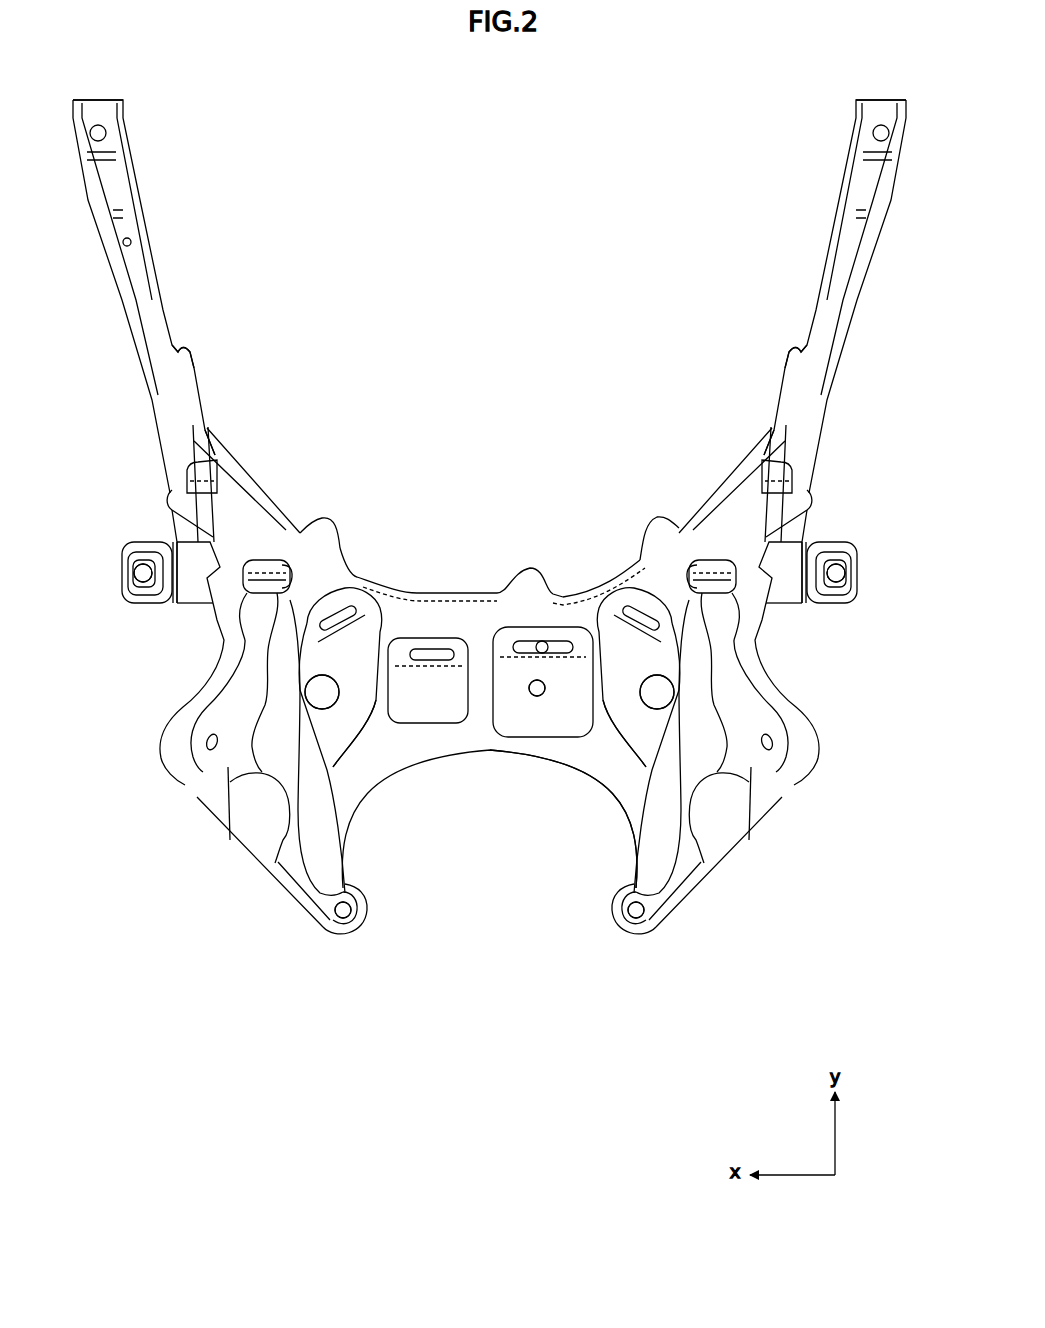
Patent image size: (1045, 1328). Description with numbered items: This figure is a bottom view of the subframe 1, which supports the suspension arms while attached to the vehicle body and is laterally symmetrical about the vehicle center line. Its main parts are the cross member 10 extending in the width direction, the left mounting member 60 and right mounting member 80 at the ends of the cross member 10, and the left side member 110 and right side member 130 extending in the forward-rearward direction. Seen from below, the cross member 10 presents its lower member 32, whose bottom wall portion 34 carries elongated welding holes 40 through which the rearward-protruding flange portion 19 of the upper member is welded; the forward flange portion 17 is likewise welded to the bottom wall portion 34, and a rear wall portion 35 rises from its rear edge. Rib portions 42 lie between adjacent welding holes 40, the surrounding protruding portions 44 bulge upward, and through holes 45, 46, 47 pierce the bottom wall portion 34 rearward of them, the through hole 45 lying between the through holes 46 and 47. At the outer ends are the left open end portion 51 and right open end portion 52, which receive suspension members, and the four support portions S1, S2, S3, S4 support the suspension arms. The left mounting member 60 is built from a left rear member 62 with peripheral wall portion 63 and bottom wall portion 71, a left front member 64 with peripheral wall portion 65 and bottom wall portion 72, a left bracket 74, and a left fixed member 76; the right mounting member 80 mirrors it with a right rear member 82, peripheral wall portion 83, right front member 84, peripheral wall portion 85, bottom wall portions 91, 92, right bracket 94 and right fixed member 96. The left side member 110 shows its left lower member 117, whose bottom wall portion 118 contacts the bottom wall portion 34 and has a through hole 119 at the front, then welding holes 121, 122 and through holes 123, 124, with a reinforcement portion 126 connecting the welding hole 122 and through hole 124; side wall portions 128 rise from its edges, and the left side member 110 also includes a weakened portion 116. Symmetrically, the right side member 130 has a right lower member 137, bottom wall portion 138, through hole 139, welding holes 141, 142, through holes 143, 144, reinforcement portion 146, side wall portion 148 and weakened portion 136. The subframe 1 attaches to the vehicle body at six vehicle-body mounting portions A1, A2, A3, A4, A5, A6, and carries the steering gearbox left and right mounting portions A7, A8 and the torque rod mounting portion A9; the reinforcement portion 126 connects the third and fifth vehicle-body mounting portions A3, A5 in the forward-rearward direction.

The subframe 1 is at (258, 162).
The cross member 10 is at (592, 545).
The flange portion 17 is at (565, 590).
The flange portion 19 is at (530, 594).
The lower member 32 is at (493, 787).
The bottom wall portion 34 is at (427, 808).
The rear wall portion 35 is at (550, 753).
The welding hole 40 is at (345, 620).
The rib portion 42 is at (388, 680).
The protruding portion 44 is at (397, 724).
The through hole 45 is at (543, 691).
The through hole 46 is at (650, 694).
The through hole 47 is at (325, 693).
The left open end portion 51 is at (834, 515).
The right open end portion 52 is at (145, 515).
The left mounting member 60 is at (795, 618).
The left rear member 62 is at (782, 618).
The peripheral wall portion 63 is at (760, 604).
The left front member 64 is at (767, 538).
The peripheral wall portion 65 is at (788, 547).
The bottom wall portion 71 is at (714, 592).
The bottom wall portion 72 is at (722, 575).
The left bracket 74 is at (795, 612).
The left fixed member 76 is at (850, 594).
The right mounting member 80 is at (186, 616).
The right rear member 82 is at (210, 618).
The peripheral wall portion 83 is at (173, 598).
The right front member 84 is at (215, 536).
The peripheral wall portion 85 is at (193, 545).
The bottom wall portion 91 is at (256, 593).
The bottom wall portion 92 is at (262, 575).
The right bracket 94 is at (178, 548).
The right fixed member 96 is at (128, 592).
The left side member 110 is at (790, 255).
The weakened portion 116 is at (768, 405).
The left lower member 117 is at (800, 330).
The bottom wall portion 118 is at (862, 208).
The through hole 119 is at (873, 132).
The welding hole 121 is at (795, 476).
The welding hole 122 is at (700, 570).
The through hole 123 is at (773, 748).
The through hole 124 is at (637, 918).
The reinforcement portion 126 is at (767, 788).
The side wall portion 128 is at (853, 343).
The right side member 130 is at (180, 275).
The weakened portion 136 is at (232, 410).
The right lower member 137 is at (198, 320).
The bottom wall portion 138 is at (125, 215).
The through hole 139 is at (107, 132).
The welding hole 141 is at (187, 474).
The welding hole 142 is at (286, 570).
The through hole 143 is at (214, 750).
The through hole 144 is at (343, 918).
The reinforcement portion 146 is at (263, 862).
The side wall portion 148 is at (133, 332).
The first vehicle-body mounting portion A1 is at (878, 110).
The second vehicle-body mounting portion A2 is at (106, 112).
The third vehicle-body mounting portion A3 is at (862, 568).
The fourth vehicle-body mounting portion A4 is at (118, 568).
The fifth vehicle-body mounting portion A5 is at (661, 928).
The sixth vehicle-body mounting portion A6 is at (318, 928).
The steering gearbox left mounting portion A7 is at (678, 684).
The steering gearbox right mounting portion A8 is at (318, 672).
The torque rod mounting portion A9 is at (525, 690).
The first support portion S1 is at (836, 534).
The second support portion S2 is at (143, 534).
The third support portion S3 is at (825, 752).
The fourth support portion S4 is at (153, 750).